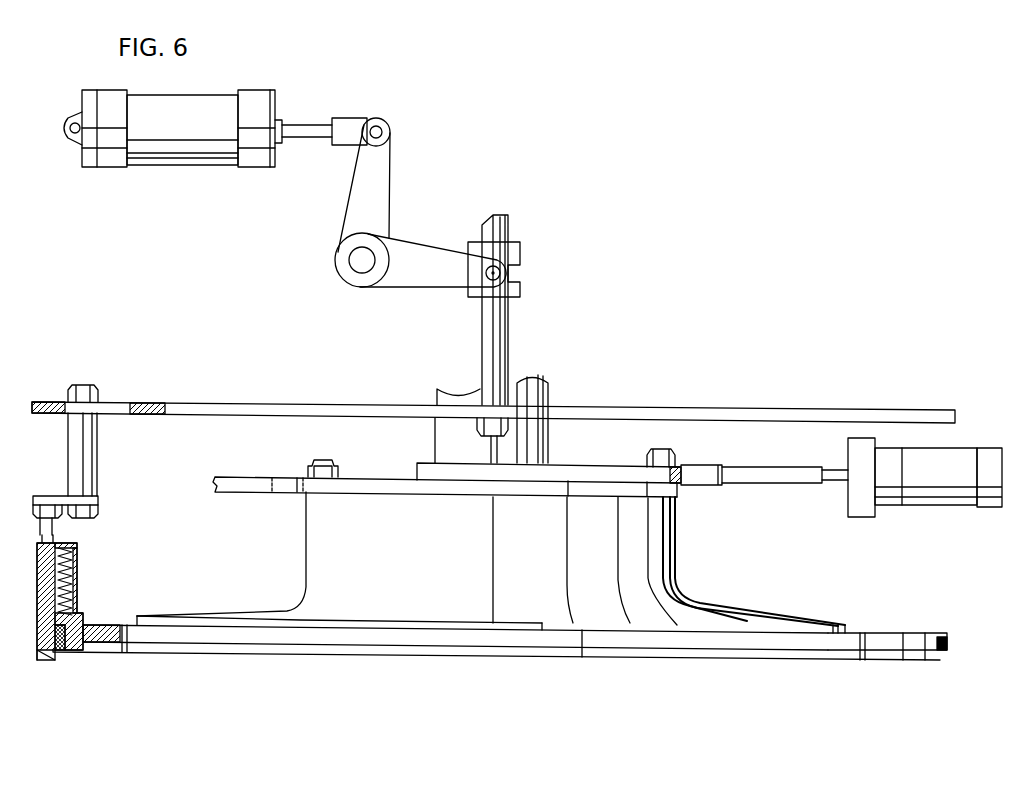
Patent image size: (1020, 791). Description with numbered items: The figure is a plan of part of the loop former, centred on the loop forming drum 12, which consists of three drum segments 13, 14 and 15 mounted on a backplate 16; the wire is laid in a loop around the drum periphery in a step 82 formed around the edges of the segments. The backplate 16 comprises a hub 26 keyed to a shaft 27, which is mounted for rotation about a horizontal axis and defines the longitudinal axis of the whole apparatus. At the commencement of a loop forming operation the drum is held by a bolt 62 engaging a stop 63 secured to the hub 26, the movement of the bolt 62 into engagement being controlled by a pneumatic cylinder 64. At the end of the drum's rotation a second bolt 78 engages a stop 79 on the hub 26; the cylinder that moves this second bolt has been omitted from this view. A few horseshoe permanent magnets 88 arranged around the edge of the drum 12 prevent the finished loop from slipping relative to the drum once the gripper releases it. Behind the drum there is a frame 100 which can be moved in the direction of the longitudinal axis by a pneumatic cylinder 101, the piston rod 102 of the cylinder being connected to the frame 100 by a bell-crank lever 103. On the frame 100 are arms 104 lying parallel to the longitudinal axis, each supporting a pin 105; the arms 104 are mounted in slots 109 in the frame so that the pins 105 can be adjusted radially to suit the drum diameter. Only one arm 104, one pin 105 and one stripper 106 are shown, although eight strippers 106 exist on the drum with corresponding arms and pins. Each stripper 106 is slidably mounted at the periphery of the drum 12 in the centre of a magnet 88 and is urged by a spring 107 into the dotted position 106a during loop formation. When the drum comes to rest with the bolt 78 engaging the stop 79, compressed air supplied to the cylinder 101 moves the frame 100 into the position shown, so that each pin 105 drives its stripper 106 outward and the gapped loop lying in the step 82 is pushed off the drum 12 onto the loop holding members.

The pneumatic cylinder 101 is at (173, 128).
The piston rod 102 is at (300, 124).
The bell-crank lever 103 is at (384, 184).
The frame 100 is at (480, 352).
The shaft 27 is at (549, 378).
The slots 109 is at (125, 402).
The arms 104 is at (98, 462).
The pin 105 is at (55, 530).
The stripper 106 is at (37, 574).
The stripper position 106a is at (46, 650).
The spring 107 is at (77, 590).
The horseshoe permanent magnets 88 is at (62, 650).
The drum segment 14 is at (105, 625).
The drum segment 13 is at (482, 655).
The drum segment 15 is at (912, 633).
The step 82 is at (943, 655).
The second bolt 78 is at (220, 477).
The stop 79 is at (299, 477).
The hub 26 is at (407, 558).
The loop forming drum 12 is at (787, 596).
The backplate 16 is at (846, 628).
The stop 63 is at (677, 467).
The bolt 62 is at (756, 467).
The pneumatic cylinder 64 is at (925, 477).